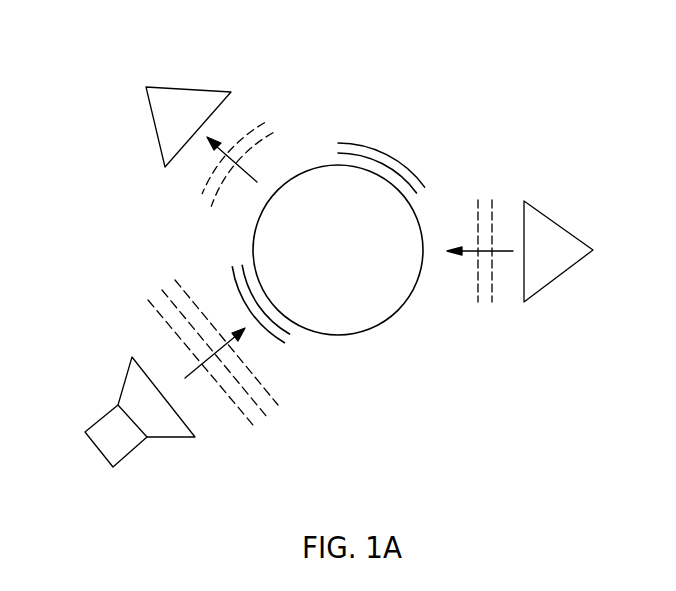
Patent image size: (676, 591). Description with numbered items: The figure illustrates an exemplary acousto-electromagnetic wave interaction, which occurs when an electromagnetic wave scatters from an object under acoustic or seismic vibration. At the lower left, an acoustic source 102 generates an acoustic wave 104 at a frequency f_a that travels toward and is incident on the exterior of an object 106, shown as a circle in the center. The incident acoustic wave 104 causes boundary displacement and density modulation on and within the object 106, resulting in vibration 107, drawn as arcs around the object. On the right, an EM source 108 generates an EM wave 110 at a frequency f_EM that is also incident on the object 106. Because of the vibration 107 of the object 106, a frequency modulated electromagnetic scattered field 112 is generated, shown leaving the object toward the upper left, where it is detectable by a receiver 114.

The acoustic source 102 is at (98, 428).
The acoustic wave 104 is at (236, 407).
The object 106 is at (421, 220).
The vibration 107 is at (370, 149).
The EM source 108 is at (555, 278).
The EM wave 110 is at (478, 292).
The frequency modulated electromagnetic scattered field 112 is at (205, 194).
The receiver 114 is at (163, 86).